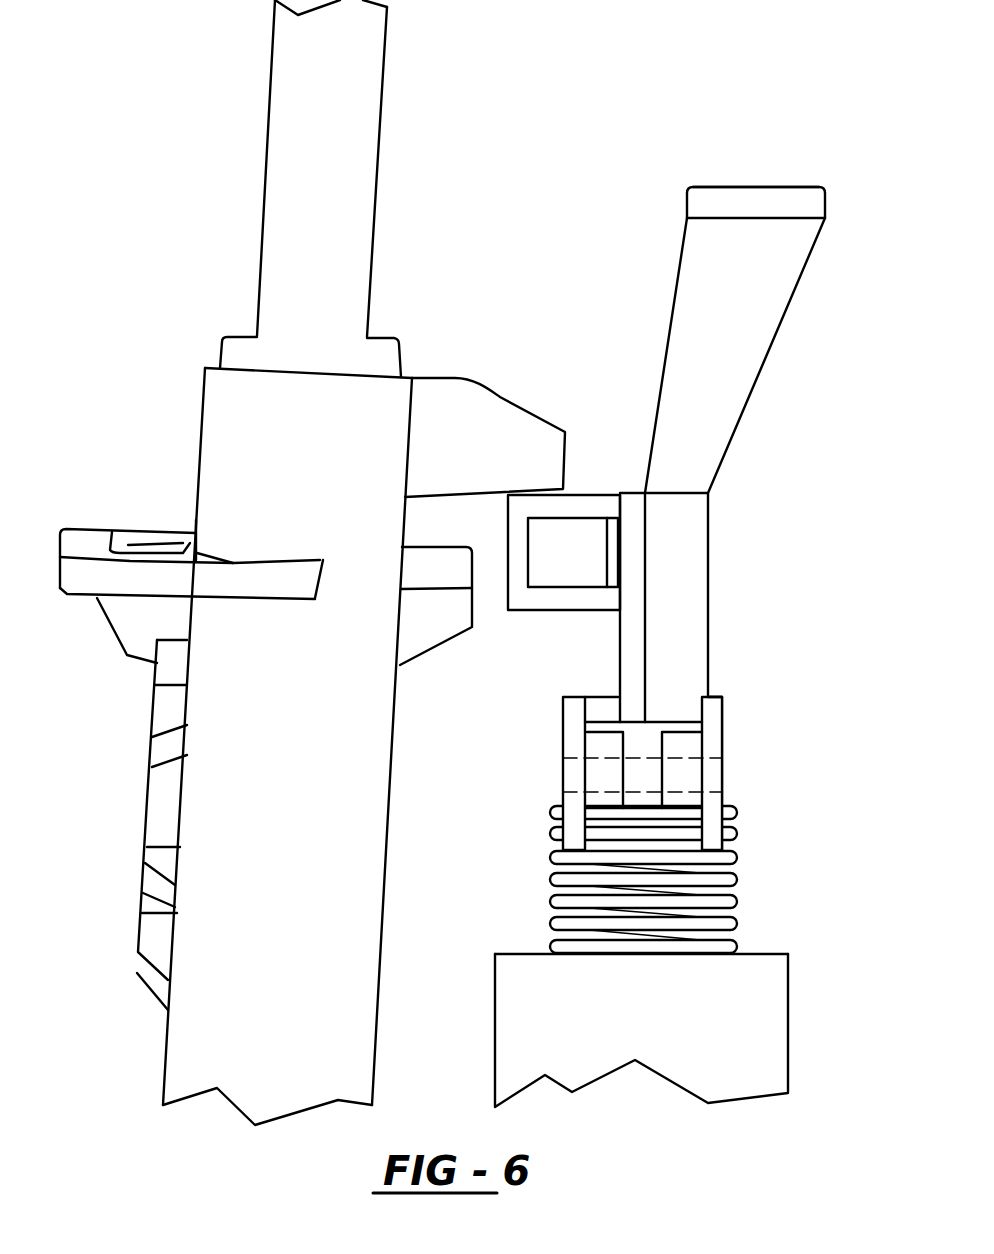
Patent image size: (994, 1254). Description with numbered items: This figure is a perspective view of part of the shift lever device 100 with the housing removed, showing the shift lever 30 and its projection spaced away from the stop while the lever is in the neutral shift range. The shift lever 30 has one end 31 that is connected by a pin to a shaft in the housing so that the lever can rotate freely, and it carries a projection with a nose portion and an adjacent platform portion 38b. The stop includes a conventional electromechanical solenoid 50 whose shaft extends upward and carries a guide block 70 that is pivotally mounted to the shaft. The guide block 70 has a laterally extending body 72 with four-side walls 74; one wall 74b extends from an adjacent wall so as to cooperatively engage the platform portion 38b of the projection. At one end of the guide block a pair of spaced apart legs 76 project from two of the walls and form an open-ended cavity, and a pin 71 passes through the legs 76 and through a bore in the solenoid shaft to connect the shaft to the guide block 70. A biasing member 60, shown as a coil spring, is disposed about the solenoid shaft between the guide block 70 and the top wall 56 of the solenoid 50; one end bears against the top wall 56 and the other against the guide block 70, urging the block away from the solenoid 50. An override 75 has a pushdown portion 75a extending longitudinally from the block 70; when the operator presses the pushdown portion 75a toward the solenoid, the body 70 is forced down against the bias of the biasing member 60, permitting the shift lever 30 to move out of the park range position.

The shift lever device 100 is at (90, 148).
The shift lever 30 is at (266, 145).
The one end of shift lever 31 is at (380, 957).
The platform portion 38b is at (492, 495).
The four-side walls 74 is at (508, 541).
The wall 74b is at (590, 490).
The laterally extending body 72 is at (607, 492).
The guide block 70 is at (730, 613).
The override 75 is at (768, 184).
The pushdown portion 75a is at (727, 187).
The biasing member 60 is at (733, 902).
The legs 76 is at (562, 755).
The pin 71 is at (642, 772).
The solenoid 50 is at (790, 1000).
The top wall of solenoid 56 is at (772, 955).